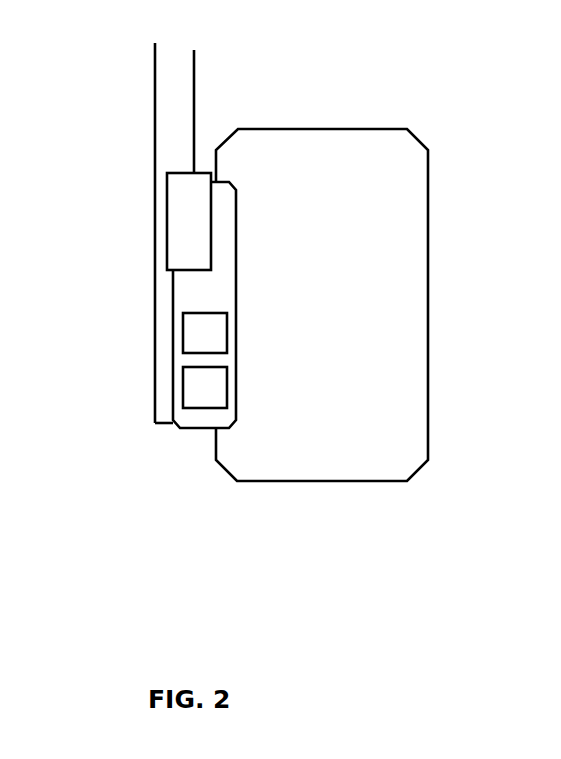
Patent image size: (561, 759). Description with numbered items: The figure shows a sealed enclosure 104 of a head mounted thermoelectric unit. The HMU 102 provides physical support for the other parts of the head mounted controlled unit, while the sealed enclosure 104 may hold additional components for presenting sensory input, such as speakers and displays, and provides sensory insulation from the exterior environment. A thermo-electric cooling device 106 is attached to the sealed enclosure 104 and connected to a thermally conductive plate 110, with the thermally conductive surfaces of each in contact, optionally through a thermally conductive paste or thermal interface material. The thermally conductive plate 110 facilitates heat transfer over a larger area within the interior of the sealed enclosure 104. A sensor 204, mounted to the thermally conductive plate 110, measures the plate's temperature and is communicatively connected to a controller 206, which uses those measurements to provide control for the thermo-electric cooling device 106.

The HMU 102 is at (167, 72).
The sealed enclosure 104 is at (402, 148).
The thermo-electric cooling device 106 is at (182, 208).
The thermally conductive plate 110 is at (192, 292).
The sensor 204 is at (200, 340).
The controller 206 is at (200, 388).